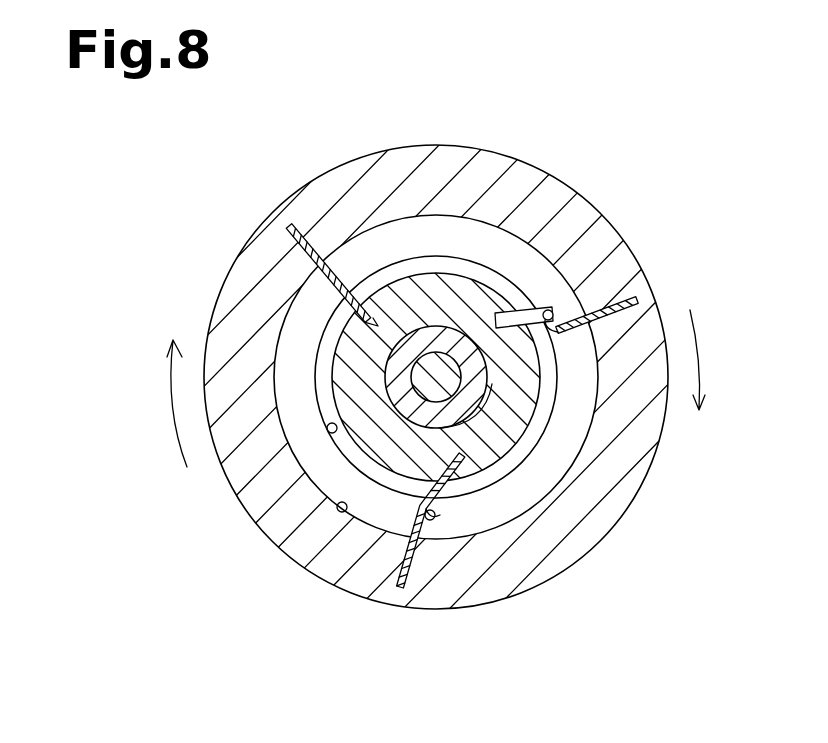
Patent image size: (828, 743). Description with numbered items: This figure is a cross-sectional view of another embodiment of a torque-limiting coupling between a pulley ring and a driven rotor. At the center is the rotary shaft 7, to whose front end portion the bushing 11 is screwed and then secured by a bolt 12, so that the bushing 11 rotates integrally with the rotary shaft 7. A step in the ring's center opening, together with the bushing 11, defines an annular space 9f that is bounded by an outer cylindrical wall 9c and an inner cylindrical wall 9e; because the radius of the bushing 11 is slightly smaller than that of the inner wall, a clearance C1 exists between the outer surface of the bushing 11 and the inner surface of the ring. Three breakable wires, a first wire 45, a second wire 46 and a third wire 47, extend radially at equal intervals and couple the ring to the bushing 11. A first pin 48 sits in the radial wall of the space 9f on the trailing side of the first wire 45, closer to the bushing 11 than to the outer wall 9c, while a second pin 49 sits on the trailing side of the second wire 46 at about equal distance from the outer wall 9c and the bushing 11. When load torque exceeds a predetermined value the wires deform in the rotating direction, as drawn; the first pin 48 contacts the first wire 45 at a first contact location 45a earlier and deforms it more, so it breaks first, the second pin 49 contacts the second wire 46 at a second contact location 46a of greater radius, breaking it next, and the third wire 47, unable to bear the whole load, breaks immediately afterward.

The rotary shaft 7 is at (412, 330).
The outer cylindrical wall 9c is at (337, 502).
The inner cylindrical wall 9e is at (332, 428).
The annular space 9f is at (563, 435).
The bushing 11 is at (383, 293).
The bolt 12 is at (437, 362).
The first wire 45 is at (637, 300).
The first contact location 45a is at (560, 327).
The second wire 46 is at (398, 590).
The second contact location 46a is at (440, 512).
The third wire 47 is at (288, 222).
The first pin 48 is at (553, 310).
The second pin 49 is at (433, 520).
The clearance C1 is at (512, 460).